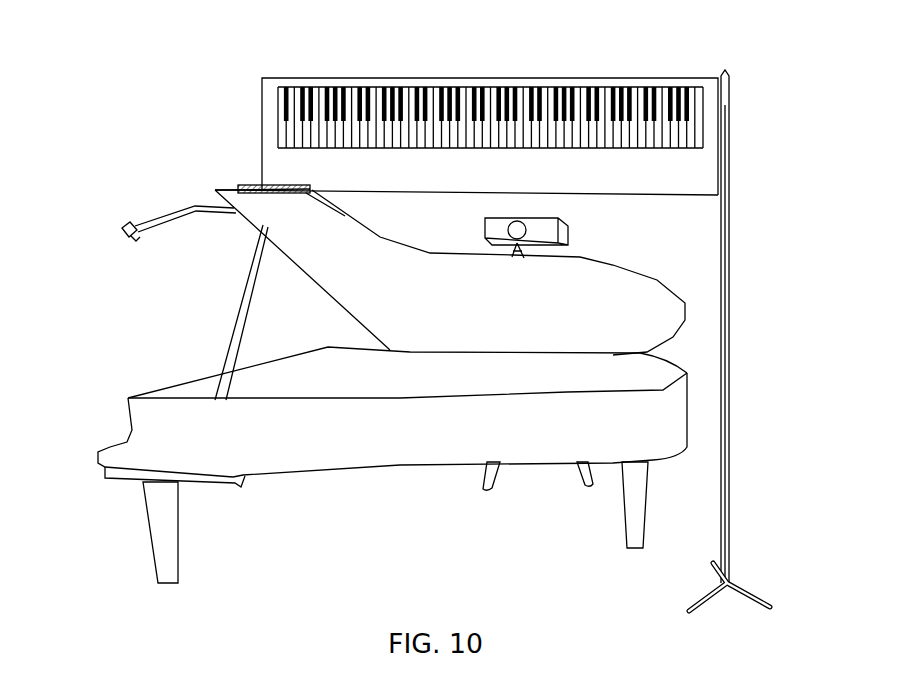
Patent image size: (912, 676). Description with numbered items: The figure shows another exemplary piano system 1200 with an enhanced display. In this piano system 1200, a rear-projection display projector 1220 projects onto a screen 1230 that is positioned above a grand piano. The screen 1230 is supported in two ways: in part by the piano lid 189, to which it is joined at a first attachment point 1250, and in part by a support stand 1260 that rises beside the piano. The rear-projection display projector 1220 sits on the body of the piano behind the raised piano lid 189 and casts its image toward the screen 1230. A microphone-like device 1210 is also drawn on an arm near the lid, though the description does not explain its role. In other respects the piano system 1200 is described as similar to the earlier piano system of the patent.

The piano system 1200 is at (747, 95).
The screen 1230 is at (533, 76).
The support stand 1260 is at (723, 232).
The piano lid 189 is at (360, 233).
The first attachment point 1250 is at (262, 190).
The rear-projection display projector 1220 is at (565, 235).
The microphone 1210 is at (125, 227).